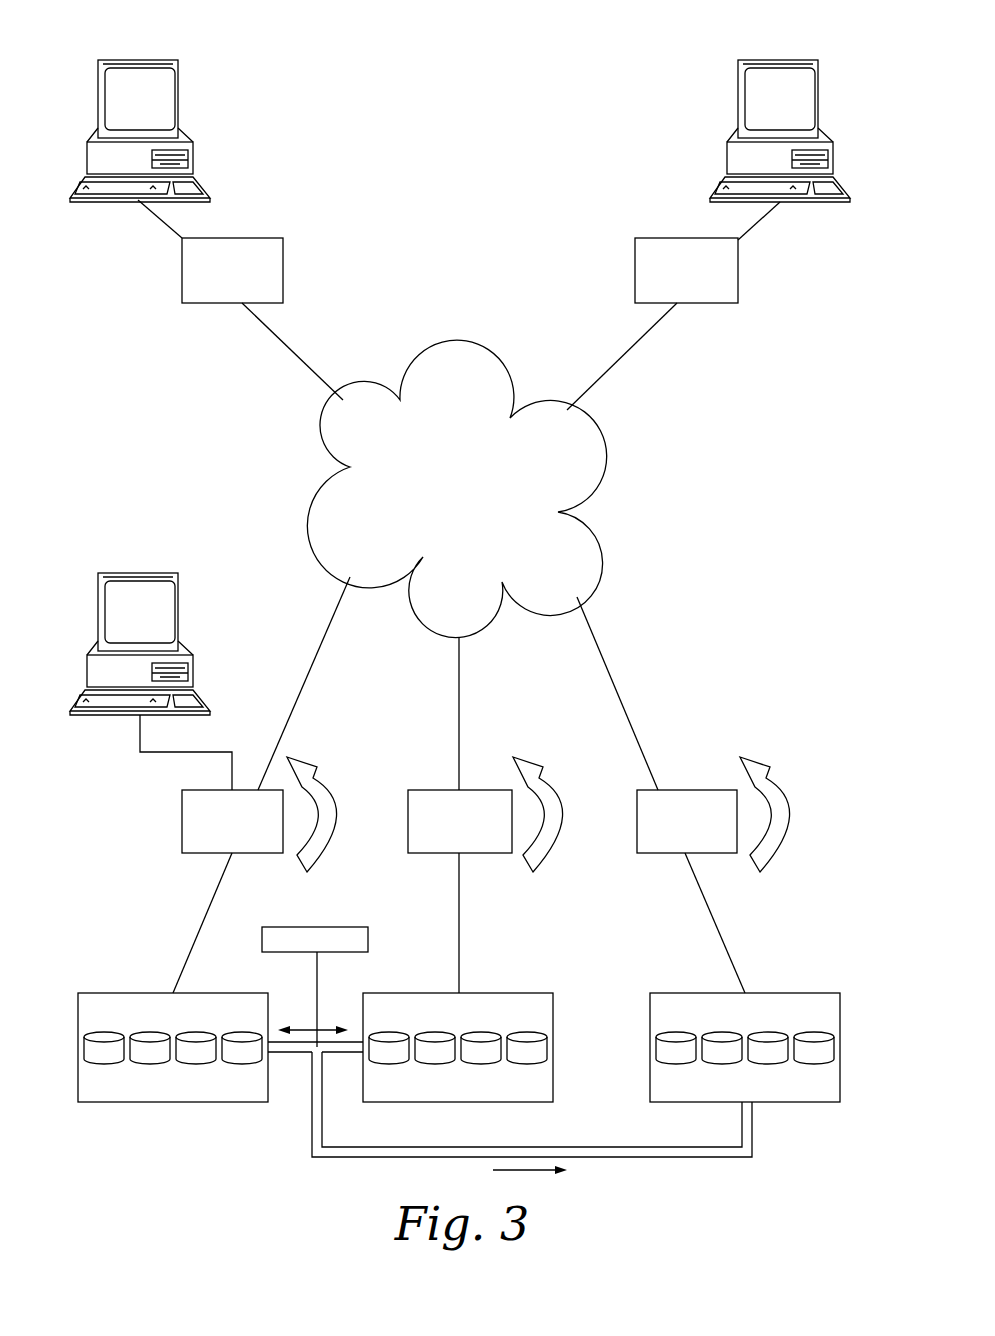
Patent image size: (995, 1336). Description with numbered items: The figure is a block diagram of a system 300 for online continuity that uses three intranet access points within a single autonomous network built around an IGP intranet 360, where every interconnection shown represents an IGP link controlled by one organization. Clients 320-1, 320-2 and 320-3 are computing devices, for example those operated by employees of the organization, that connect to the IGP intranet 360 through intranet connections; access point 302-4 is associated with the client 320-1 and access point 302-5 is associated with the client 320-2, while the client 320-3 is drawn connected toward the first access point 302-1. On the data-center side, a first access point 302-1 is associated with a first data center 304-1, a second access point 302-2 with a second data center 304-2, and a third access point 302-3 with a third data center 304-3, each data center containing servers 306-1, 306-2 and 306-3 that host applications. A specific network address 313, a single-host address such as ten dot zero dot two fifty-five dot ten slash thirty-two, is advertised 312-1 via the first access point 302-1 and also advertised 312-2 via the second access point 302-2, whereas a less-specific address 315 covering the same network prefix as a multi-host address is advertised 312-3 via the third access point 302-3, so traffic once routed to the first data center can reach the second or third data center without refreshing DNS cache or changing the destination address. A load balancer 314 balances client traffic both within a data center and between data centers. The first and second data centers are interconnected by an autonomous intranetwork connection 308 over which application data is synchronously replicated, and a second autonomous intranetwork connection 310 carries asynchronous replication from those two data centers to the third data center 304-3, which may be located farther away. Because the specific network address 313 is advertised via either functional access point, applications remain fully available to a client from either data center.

The system for online continuity 300 is at (381, 49).
The first access point 302-1 is at (182, 818).
The second access point 302-2 is at (408, 818).
The third access point 302-3 is at (637, 818).
The access point 302-4 is at (182, 270).
The access point 302-5 is at (738, 268).
The first data center 304-1 is at (227, 993).
The second data center 304-2 is at (510, 993).
The third data center 304-3 is at (797, 993).
The servers 306-1 is at (105, 1087).
The servers 306-2 is at (376, 1088).
The servers 306-3 is at (817, 1088).
The autonomous intranetwork connection 308 is at (292, 1053).
The second autonomous intranetwork connection 310 is at (532, 1148).
The advertisement of specific network address 312-1 is at (326, 791).
The advertisement of specific network address 312-2 is at (552, 791).
The advertisement of less-specific address 312-3 is at (783, 790).
The specific network address 313 is at (340, 722).
The load balancer 314 is at (317, 927).
The less-specific address 315 is at (816, 681).
The client 320-1 is at (141, 60).
The client 320-2 is at (781, 60).
The client 320-3 is at (141, 573).
The IGP intranet 360 is at (445, 349).